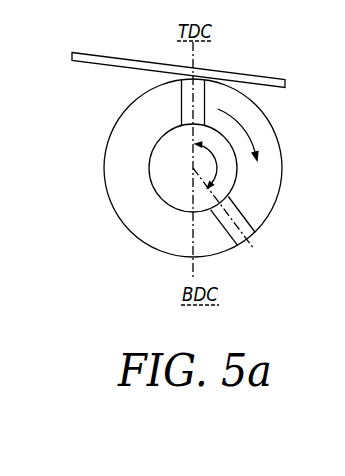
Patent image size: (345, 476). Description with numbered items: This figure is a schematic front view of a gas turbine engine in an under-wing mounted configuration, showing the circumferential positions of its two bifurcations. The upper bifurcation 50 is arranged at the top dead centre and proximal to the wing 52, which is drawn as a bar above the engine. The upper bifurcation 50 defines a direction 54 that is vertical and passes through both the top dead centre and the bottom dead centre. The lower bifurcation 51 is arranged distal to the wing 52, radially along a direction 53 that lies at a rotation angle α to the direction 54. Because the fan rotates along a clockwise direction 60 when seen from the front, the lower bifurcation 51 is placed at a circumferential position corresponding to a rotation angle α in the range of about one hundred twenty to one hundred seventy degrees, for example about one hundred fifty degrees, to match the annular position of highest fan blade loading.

The upper bifurcation 50 is at (182, 80).
The lower bifurcation 51 is at (244, 239).
The wing 52 is at (98, 63).
The direction 53 is at (245, 240).
The direction 54 is at (190, 265).
The clockwise direction 60 is at (268, 118).